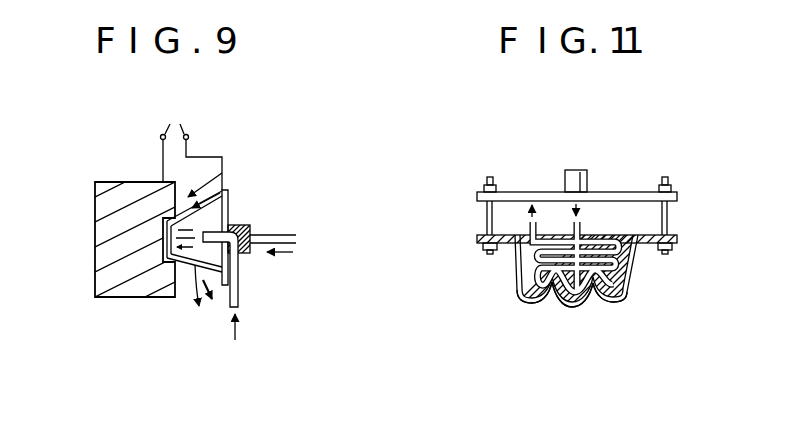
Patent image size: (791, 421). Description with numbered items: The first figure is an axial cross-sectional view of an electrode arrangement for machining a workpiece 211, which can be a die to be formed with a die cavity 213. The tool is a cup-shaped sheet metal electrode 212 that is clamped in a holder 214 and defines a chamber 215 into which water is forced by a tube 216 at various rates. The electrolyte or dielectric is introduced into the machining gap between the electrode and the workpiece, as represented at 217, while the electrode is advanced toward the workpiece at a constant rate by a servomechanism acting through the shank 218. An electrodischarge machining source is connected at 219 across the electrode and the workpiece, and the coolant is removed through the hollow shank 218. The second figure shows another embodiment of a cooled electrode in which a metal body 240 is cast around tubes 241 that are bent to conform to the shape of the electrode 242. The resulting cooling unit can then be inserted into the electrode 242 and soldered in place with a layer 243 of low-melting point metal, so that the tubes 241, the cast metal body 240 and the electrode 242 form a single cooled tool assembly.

In FIG. 9, the workpiece 211 is at (102, 272).
In FIG. 9, the cup-shaped sheet metal electrode 212 is at (197, 263).
In FIG. 9, the die cavity 213 is at (170, 236).
In FIG. 9, the holder 214 is at (231, 218).
In FIG. 9, the chamber 215 is at (207, 223).
In FIG. 9, the tube 216 is at (233, 275).
In FIG. 9, the electrolyte or dielectric introduction 217 is at (200, 185).
In FIG. 9, the shank 218 is at (297, 238).
In FIG. 9, the electrodischarge machining source connection 219 is at (192, 142).
In FIG. 11, the metal body 240 is at (632, 268).
In FIG. 11, the tubes 241 is at (605, 300).
In FIG. 11, the electrode 242 is at (575, 306).
In FIG. 11, the layer of low-melting point metal 243 is at (532, 301).